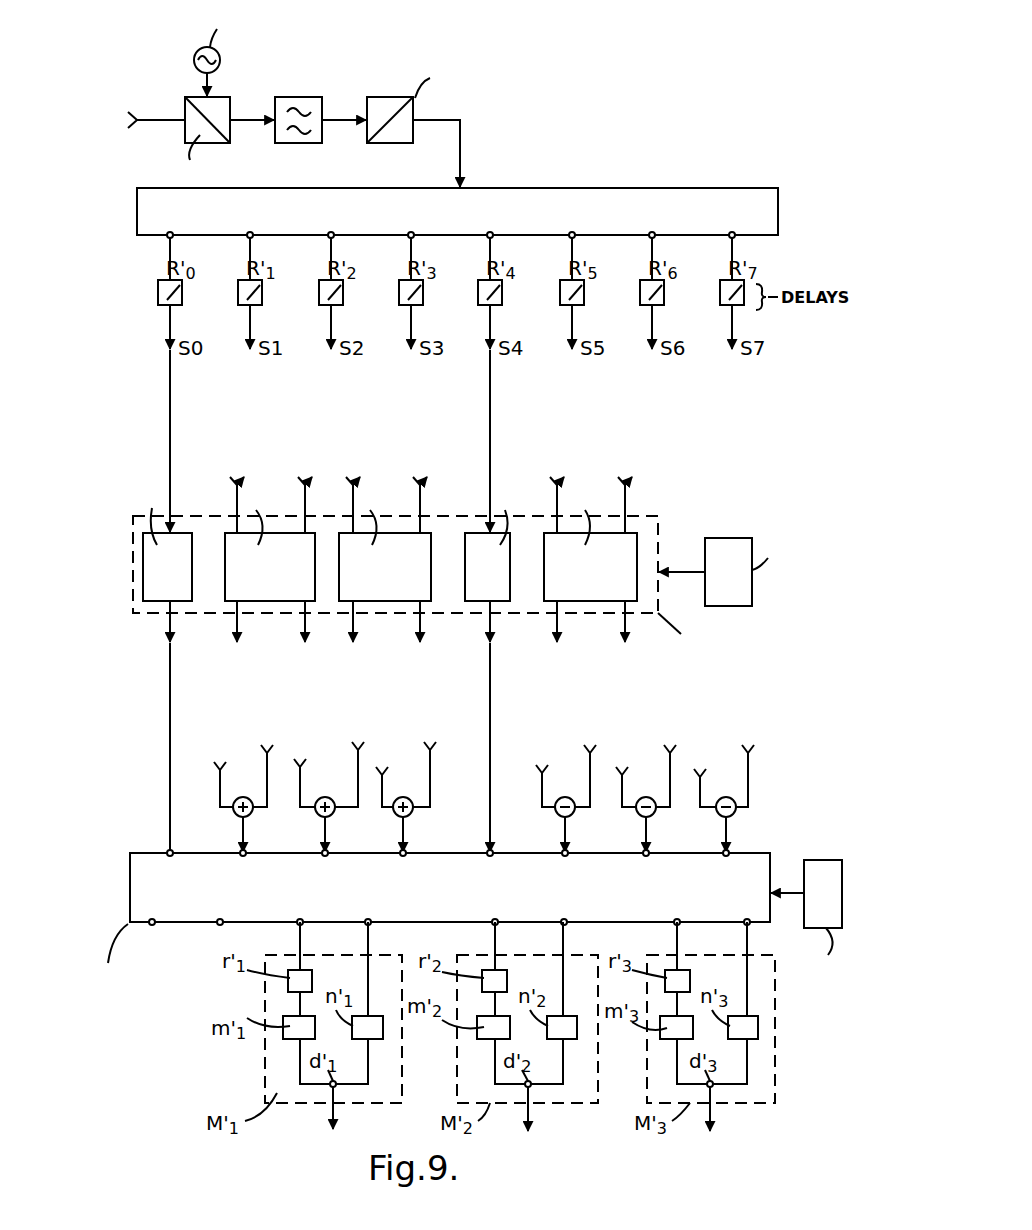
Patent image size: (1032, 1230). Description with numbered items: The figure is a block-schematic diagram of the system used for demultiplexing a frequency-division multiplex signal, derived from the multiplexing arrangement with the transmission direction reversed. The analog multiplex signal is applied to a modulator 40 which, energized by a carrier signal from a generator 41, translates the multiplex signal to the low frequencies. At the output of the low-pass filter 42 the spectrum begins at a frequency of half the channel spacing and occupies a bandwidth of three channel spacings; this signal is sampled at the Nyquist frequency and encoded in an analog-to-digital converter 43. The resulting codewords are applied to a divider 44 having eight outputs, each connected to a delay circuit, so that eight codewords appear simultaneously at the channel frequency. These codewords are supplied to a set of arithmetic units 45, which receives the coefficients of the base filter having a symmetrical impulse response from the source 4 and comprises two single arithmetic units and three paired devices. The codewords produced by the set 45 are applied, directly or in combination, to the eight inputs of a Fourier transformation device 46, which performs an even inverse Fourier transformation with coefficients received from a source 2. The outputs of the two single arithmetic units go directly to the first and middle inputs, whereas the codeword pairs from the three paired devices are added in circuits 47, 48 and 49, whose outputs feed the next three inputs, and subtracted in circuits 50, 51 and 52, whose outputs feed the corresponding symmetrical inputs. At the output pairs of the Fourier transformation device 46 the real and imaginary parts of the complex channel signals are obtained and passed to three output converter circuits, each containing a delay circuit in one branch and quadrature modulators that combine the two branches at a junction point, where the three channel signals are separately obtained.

The modulator 40 is at (187, 102).
The generator 41 is at (220, 55).
The low-pass filter 42 is at (327, 65).
The analog-to-digital converter 43 is at (393, 100).
The divider 44 is at (590, 196).
The set of arithmetic units 45 is at (650, 516).
The source 4 is at (725, 540).
The Fourier transformation device 46 is at (182, 925).
The adding circuit 47 is at (235, 817).
The adding circuit 48 is at (316, 817).
The adding circuit 49 is at (395, 817).
The subtracting circuit 50 is at (731, 819).
The subtracting circuit 51 is at (651, 819).
The subtracting circuit 52 is at (570, 819).
The source 2 is at (821, 866).